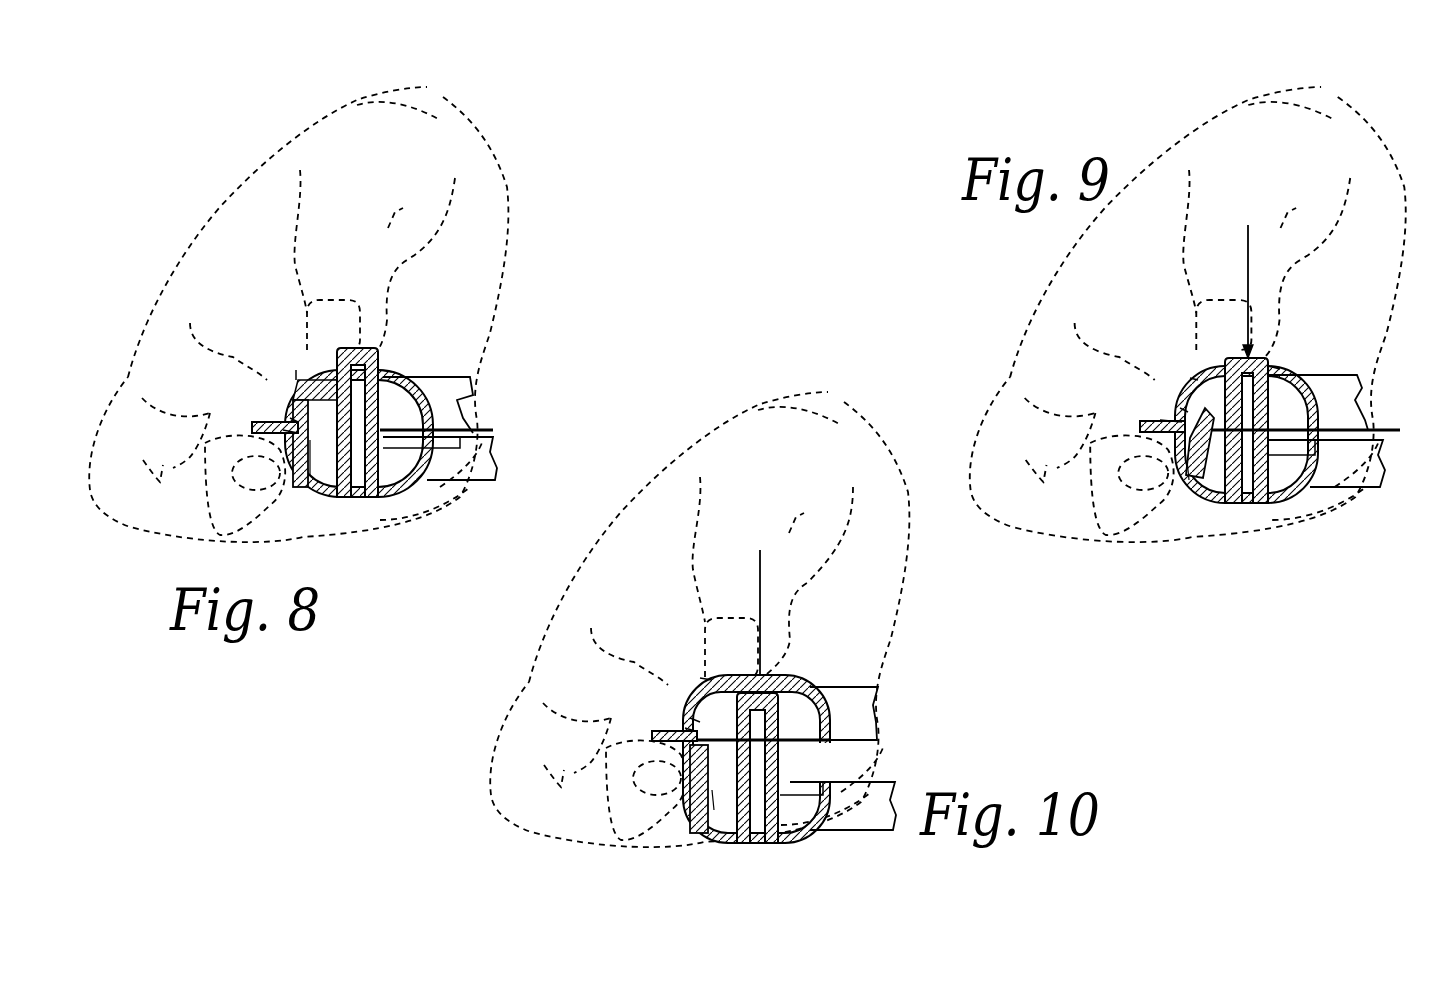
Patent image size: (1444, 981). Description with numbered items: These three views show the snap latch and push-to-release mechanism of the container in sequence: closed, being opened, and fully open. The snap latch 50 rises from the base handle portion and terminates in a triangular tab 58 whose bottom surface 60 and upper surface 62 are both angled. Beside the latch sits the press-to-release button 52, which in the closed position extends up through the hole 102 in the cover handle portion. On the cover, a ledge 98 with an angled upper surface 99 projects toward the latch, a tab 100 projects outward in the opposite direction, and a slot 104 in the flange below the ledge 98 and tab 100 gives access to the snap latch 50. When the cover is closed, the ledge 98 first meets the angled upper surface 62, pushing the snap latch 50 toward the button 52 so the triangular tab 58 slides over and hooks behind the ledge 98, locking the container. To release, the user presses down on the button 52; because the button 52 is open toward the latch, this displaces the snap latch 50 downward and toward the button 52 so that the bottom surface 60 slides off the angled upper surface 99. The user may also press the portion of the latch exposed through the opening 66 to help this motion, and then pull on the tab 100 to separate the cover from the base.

In FIG. 8, the snap latch 50 is at (345, 490).
In FIG. 9, the snap latch 50 is at (1220, 505).
In FIG. 10, the snap latch 50 is at (728, 845).
In FIG. 8, the press-to-release button 52 is at (376, 352).
In FIG. 9, the press-to-release button 52 is at (1270, 363).
In FIG. 10, the press-to-release button 52 is at (773, 732).
In FIG. 8, the triangular tab 58 is at (310, 409).
In FIG. 9, the triangular tab 58 is at (1210, 420).
In FIG. 10, the triangular tab 58 is at (770, 735).
In FIG. 8, the bottom surface 60 is at (283, 413).
In FIG. 9, the bottom surface 60 is at (1200, 420).
In FIG. 10, the bottom surface 60 is at (690, 785).
In FIG. 8, the upper surface 62 is at (300, 405).
In FIG. 9, the upper surface 62 is at (1187, 442).
In FIG. 10, the upper surface 62 is at (697, 800).
In FIG. 8, the opening 66 is at (292, 457).
In FIG. 9, the opening 66 is at (1187, 470).
In FIG. 10, the opening 66 is at (707, 795).
In FIG. 8, the ledge 98 is at (283, 433).
In FIG. 9, the ledge 98 is at (1167, 422).
In FIG. 10, the ledge 98 is at (690, 730).
In FIG. 8, the angled upper surface 99 is at (290, 420).
In FIG. 9, the angled upper surface 99 is at (1180, 410).
In FIG. 10, the angled upper surface 99 is at (695, 720).
In FIG. 8, the tab 100 is at (253, 423).
In FIG. 9, the tab 100 is at (1147, 422).
In FIG. 10, the tab 100 is at (650, 733).
In FIG. 8, the hole 102 is at (383, 370).
In FIG. 9, the hole 102 is at (1272, 367).
In FIG. 8, the slot 104 is at (288, 380).
In FIG. 9, the slot 104 is at (1193, 377).
In FIG. 10, the slot 104 is at (702, 678).